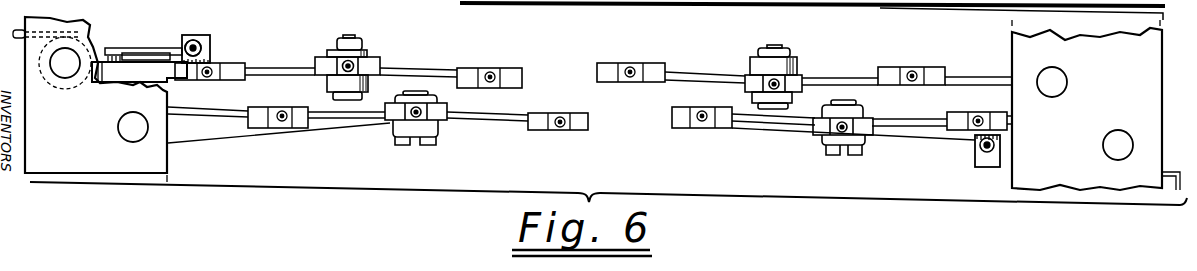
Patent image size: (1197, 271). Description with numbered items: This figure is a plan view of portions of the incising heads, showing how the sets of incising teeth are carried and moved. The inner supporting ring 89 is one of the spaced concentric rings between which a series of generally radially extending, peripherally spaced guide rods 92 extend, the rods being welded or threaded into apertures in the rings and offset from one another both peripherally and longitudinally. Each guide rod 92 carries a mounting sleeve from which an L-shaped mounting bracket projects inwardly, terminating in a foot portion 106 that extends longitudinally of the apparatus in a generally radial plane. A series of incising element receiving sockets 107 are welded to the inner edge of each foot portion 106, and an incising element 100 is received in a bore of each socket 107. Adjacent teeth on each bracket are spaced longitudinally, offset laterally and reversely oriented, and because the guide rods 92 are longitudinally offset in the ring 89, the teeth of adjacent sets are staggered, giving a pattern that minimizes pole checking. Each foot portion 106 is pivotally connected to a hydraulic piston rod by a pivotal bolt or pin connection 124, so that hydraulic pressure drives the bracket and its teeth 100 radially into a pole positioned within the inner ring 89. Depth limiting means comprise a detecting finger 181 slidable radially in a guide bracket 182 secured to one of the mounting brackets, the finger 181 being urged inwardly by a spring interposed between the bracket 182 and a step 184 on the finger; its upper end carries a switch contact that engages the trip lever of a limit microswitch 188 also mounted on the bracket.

The inner supporting ring 89 is at (62, 165).
The guide rod 92 is at (65, 70).
The incising element 100 is at (632, 67).
The foot portion 106 is at (275, 68).
The incising element receiving socket 107 is at (467, 72).
The pivotal bolt or pin connection 124 is at (347, 40).
The detecting finger 181 is at (204, 44).
The guide bracket 182 is at (193, 33).
The step 184 is at (198, 43).
The limit microswitch 188 is at (140, 50).